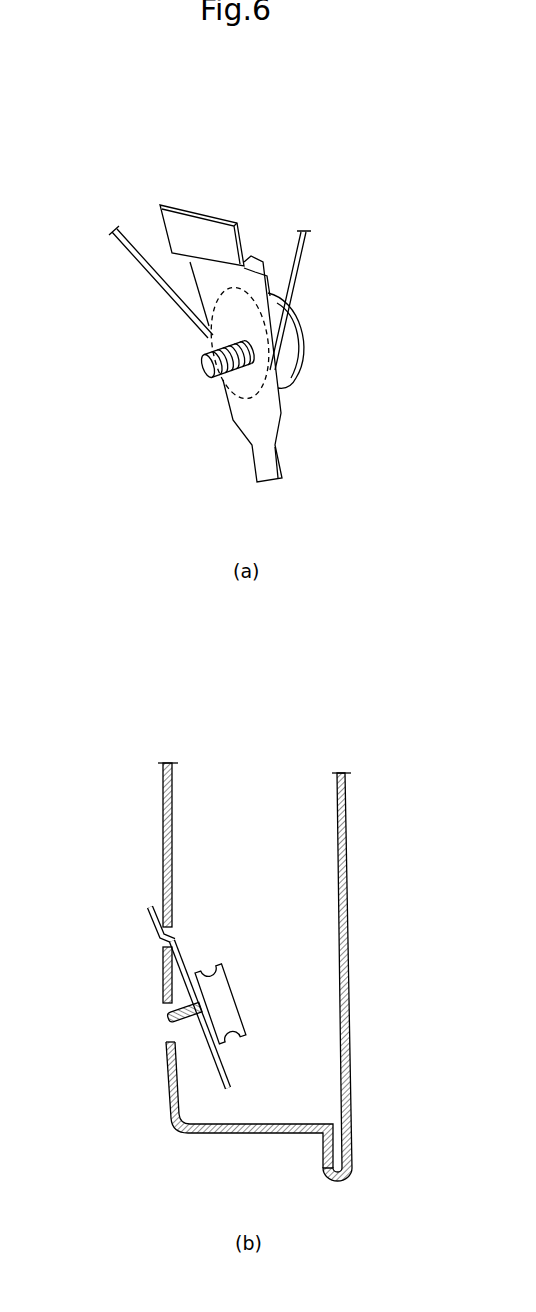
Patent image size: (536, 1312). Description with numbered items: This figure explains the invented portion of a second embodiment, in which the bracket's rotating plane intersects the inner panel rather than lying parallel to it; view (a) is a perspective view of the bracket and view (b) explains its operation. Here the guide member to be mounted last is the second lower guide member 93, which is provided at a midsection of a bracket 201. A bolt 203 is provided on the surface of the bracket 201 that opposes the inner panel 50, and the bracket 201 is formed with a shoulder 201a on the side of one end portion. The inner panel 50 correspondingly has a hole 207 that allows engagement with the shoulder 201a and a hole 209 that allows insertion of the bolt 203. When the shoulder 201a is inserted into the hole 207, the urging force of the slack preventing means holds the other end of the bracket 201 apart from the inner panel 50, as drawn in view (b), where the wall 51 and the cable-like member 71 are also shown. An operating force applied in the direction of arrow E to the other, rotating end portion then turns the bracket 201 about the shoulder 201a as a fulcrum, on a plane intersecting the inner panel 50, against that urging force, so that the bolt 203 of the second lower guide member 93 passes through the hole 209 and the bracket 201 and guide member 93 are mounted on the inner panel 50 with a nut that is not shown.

The inner panel 50 is at (173, 1118).
The side wall 51 is at (347, 840).
The wire 71 is at (302, 278).
The second lower guide member 93 is at (301, 345).
The bracket 201 is at (267, 420).
The shoulder 201a is at (223, 240).
The bolt 203 is at (210, 353).
The hole 207 is at (175, 928).
The hole 209 is at (167, 1042).
The arrow E is at (257, 1023).